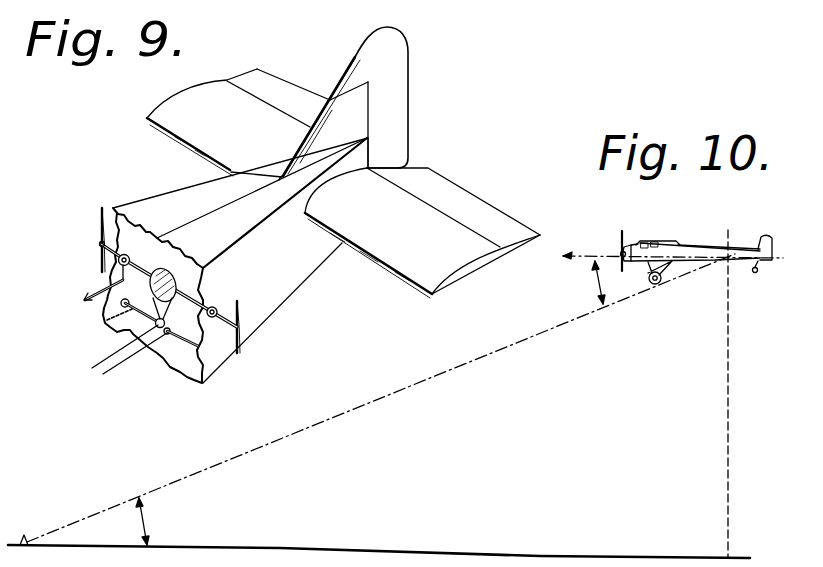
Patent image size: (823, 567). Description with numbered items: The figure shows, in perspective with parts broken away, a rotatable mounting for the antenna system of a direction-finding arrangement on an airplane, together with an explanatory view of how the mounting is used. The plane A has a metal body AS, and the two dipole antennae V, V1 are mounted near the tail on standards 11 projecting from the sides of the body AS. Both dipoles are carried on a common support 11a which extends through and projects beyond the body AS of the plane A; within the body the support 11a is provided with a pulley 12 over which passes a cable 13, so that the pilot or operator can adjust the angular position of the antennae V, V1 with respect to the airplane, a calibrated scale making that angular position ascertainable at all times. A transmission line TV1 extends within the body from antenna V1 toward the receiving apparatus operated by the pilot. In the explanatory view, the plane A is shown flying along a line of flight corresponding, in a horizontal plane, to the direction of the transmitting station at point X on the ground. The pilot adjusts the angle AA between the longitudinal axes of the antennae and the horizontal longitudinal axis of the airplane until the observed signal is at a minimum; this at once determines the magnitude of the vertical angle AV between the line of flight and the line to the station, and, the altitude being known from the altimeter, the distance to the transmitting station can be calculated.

In FIG. 9, the plane A is at (164, 202).
In FIG. 10, the plane A is at (692, 248).
In FIG. 9, the body of the plane AS is at (103, 318).
In FIG. 9, the antenna V1 is at (100, 224).
In FIG. 9, the antenna V is at (238, 337).
In FIG. 10, the antenna V is at (725, 260).
In FIG. 9, the standards 11 is at (100, 251).
In FIG. 9, the common support 11a is at (146, 262).
In FIG. 9, the pulley 12 is at (171, 277).
In FIG. 9, the cable 13 is at (148, 300).
In FIG. 9, the transmission line TV1 is at (88, 298).
In FIG. 10, the angle AA is at (594, 282).
In FIG. 10, the vertical angle AV is at (137, 521).
In FIG. 10, the reference point on ground X is at (26, 538).